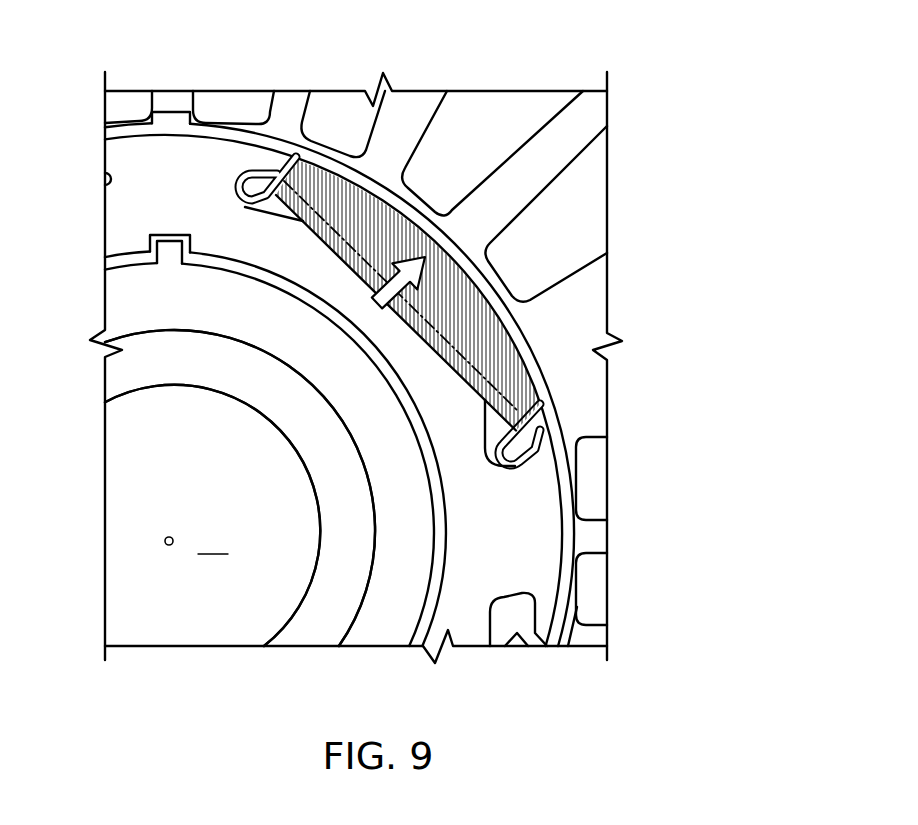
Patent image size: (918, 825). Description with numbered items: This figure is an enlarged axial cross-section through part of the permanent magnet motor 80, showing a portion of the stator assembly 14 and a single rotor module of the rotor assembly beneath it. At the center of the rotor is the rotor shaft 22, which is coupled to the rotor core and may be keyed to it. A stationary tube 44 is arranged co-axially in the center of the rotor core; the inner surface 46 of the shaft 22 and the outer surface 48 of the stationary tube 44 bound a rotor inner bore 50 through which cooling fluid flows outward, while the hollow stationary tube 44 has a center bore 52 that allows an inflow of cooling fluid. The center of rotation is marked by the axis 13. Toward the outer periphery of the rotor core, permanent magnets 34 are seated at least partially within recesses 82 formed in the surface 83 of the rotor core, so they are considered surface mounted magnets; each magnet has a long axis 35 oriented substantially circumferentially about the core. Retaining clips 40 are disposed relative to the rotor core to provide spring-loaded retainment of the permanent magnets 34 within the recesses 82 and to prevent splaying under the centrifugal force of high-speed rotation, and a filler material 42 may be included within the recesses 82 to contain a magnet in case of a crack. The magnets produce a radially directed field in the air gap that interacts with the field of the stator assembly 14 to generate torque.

The rotational axis 13 is at (163, 541).
The stator assembly 14 is at (553, 156).
The rotor shaft 22 is at (340, 393).
The permanent magnets 34 is at (447, 288).
The long axis 35 is at (272, 172).
The retaining clips 40 is at (402, 207).
The filler material 42 is at (486, 410).
The stationary tube 44 is at (157, 373).
The inner surface 46 is at (222, 340).
The outer surface 48 is at (302, 604).
The rotor inner bore 50 is at (358, 520).
The center bore 52 is at (213, 540).
The permanent magnet motor 80 is at (688, 49).
The recesses 82 is at (540, 362).
The surface 83 is at (165, 127).